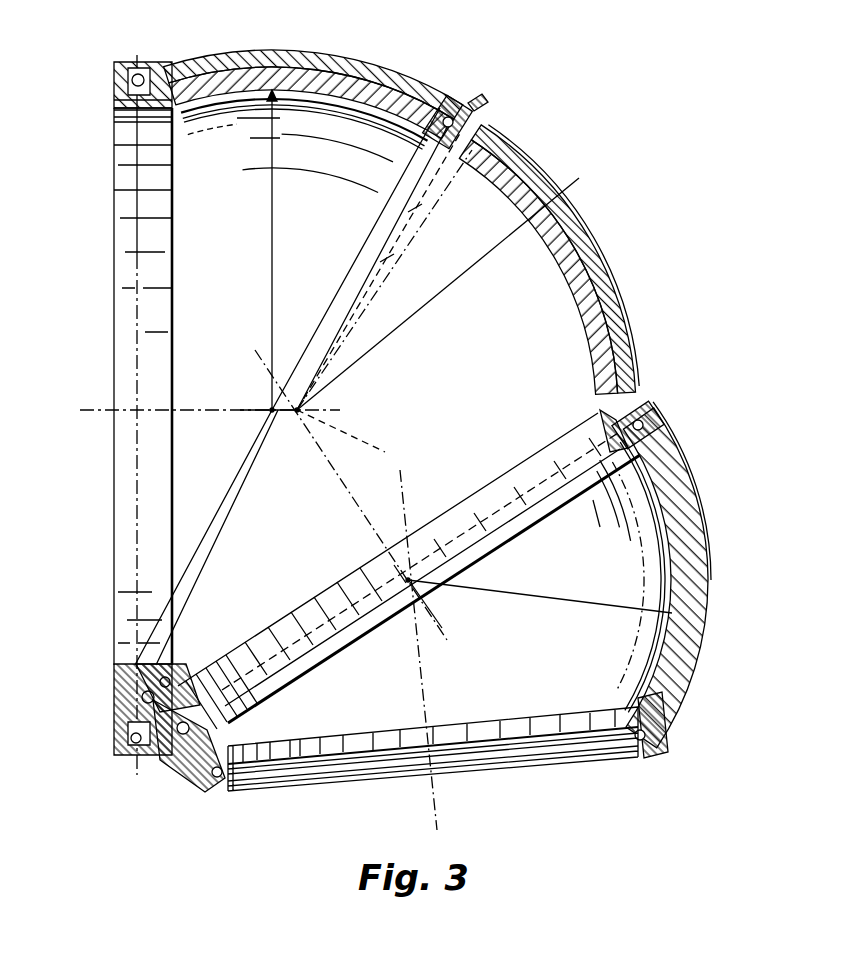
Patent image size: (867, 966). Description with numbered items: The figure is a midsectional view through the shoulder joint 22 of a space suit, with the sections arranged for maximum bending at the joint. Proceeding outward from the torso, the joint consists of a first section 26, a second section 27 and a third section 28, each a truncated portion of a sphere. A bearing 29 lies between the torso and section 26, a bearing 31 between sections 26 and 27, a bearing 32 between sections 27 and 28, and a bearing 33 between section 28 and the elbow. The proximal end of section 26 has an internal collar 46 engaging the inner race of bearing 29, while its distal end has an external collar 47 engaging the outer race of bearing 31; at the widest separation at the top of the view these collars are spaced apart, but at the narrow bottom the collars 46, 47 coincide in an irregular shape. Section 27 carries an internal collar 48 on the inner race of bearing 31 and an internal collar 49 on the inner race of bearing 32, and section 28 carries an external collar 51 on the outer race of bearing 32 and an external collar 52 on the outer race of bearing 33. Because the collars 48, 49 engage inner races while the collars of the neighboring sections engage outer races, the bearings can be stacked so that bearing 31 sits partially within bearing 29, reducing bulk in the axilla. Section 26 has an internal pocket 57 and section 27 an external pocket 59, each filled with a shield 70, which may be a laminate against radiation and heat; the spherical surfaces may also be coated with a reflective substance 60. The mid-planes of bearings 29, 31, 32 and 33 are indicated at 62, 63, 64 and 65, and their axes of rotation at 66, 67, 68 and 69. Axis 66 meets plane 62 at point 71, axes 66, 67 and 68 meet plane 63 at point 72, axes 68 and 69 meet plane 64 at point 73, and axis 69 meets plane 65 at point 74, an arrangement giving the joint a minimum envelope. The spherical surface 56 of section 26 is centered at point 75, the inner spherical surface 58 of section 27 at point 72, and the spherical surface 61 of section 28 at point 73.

The shoulder joint 22 is at (596, 233).
The first section 26 is at (419, 213).
The second section 27 is at (468, 265).
The third section 28 is at (587, 575).
The bearing 29 is at (113, 99).
The bearing 31 is at (484, 101).
The bearing 32 is at (666, 427).
The bearing 33 is at (666, 745).
The internal collar 46 is at (162, 112).
The external collar 47 is at (468, 108).
The internal collar 48 is at (452, 152).
The internal collar 49 is at (190, 640).
The external collar 51 is at (655, 420).
The external collar 52 is at (665, 700).
The spherical surface 56 is at (238, 56).
The internal pocket 57 is at (258, 100).
The inner spherical surface 58 is at (585, 322).
The external pocket 59 is at (558, 176).
The reflective substance 60 is at (706, 515).
The spherical surface 61 is at (700, 605).
The mid-plane 62 is at (137, 332).
The mid-plane 63 is at (400, 236).
The mid-plane 64 is at (478, 528).
The mid-plane 65 is at (540, 748).
The axis of rotation 66 is at (246, 408).
The axis of rotation 67 is at (355, 428).
The axis of rotation 68 is at (345, 470).
The axis of rotation 69 is at (425, 674).
The shield 70 is at (350, 112).
The point 71 is at (137, 410).
The point 72 is at (302, 408).
The point 73 is at (414, 586).
The point 74 is at (428, 752).
The point 75 is at (270, 406).